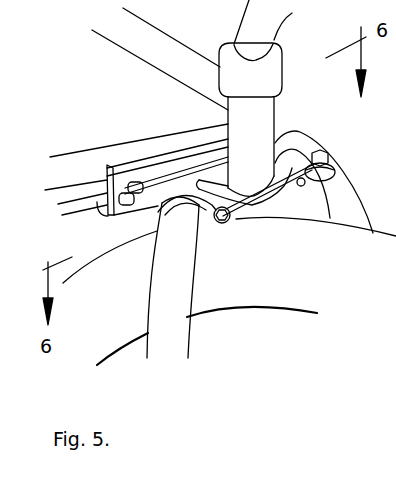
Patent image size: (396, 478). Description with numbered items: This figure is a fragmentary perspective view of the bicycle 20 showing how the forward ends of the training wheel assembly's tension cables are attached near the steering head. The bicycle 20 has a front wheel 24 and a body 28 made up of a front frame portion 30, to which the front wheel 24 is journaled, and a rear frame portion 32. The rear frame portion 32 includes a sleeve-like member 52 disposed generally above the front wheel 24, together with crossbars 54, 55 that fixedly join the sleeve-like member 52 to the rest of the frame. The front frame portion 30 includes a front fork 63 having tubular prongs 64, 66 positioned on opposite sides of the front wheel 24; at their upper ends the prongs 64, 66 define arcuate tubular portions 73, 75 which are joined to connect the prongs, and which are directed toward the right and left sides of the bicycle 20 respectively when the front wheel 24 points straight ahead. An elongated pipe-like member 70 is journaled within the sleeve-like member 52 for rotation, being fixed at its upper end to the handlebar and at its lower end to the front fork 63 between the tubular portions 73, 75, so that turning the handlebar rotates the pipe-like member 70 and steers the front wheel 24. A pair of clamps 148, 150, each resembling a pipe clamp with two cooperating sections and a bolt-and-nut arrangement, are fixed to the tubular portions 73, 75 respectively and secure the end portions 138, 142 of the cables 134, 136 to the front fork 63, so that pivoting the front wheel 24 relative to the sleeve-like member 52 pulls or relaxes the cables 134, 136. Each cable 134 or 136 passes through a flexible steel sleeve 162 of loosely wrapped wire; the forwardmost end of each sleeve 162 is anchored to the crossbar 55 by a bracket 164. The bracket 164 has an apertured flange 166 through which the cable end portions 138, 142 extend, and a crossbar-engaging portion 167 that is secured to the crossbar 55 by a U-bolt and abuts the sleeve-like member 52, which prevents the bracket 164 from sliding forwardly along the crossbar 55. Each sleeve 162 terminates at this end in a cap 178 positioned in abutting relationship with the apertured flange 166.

The bicycle 20 is at (122, 81).
The front wheel 24 is at (272, 296).
The body 28 is at (100, 42).
The front frame portion 30 is at (130, 356).
The rear frame portion 32 is at (178, 36).
The sleeve-like member 52 is at (278, 100).
The crossbar 54 is at (197, 51).
The crossbar 55 is at (80, 151).
The front fork 63 is at (188, 337).
The tubular prong 64 is at (148, 312).
The tubular prong 66 is at (353, 210).
The pipe-like member 70 is at (291, 20).
The arcuate tubular portion 73 is at (193, 267).
The arcuate tubular portion 75 is at (347, 164).
The cable 134 is at (150, 205).
The cable 136 is at (185, 149).
The end portion 138 is at (300, 188).
The end portion 142 is at (239, 219).
The clamp 148 is at (184, 211).
The clamp 150 is at (305, 134).
The flexible steel sleeve 162 is at (90, 193).
The bracket 164 is at (147, 156).
The apertured flange 166 is at (110, 266).
The crossbar-engaging portion 167 is at (215, 150).
The cap 178 is at (103, 207).